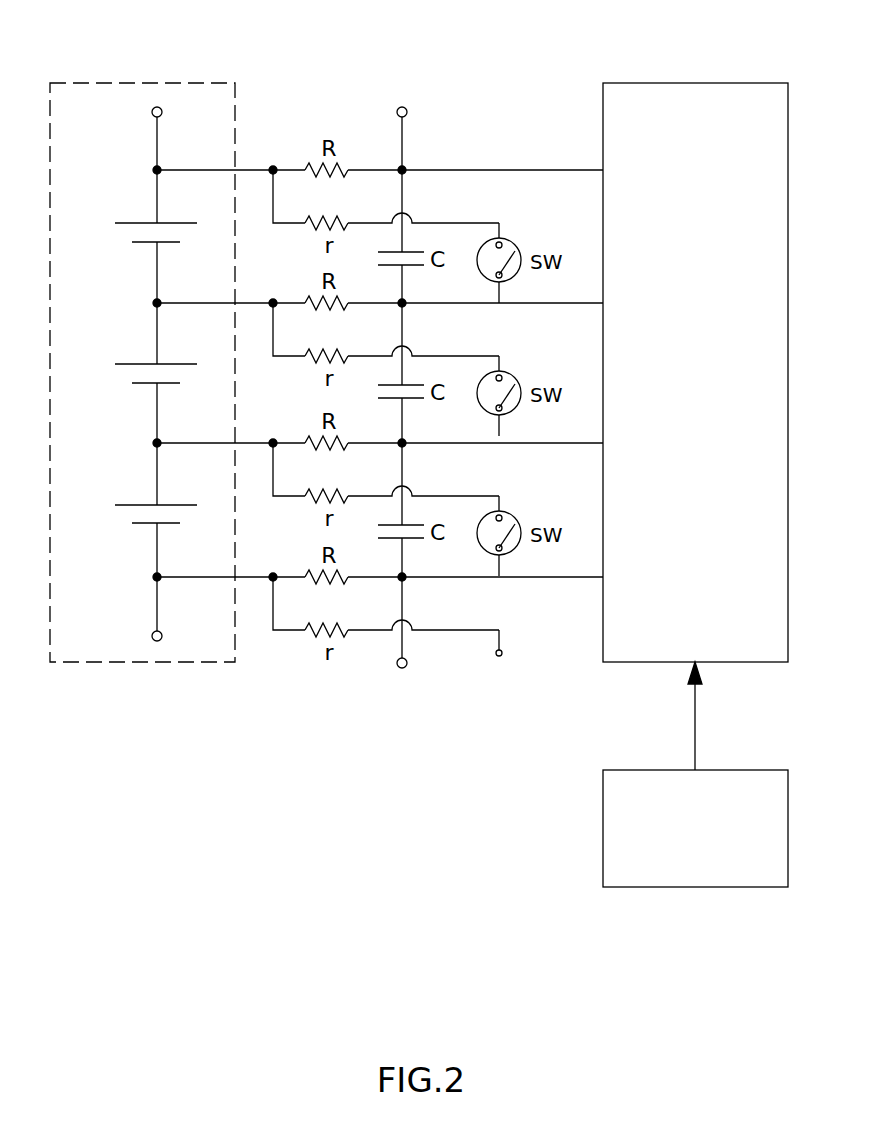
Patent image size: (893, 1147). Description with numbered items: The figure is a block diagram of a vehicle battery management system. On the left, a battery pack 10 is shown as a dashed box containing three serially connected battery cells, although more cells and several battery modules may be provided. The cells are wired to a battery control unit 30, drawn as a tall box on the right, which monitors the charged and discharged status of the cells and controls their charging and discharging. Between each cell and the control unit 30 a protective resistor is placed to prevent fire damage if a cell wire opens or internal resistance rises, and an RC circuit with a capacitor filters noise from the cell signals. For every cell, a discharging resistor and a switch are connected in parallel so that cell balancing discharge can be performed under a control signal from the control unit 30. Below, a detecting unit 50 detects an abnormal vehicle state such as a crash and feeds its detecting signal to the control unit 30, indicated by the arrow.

The battery pack 10 is at (130, 83).
The battery control unit 30 is at (695, 83).
The detecting unit 50 is at (697, 887).